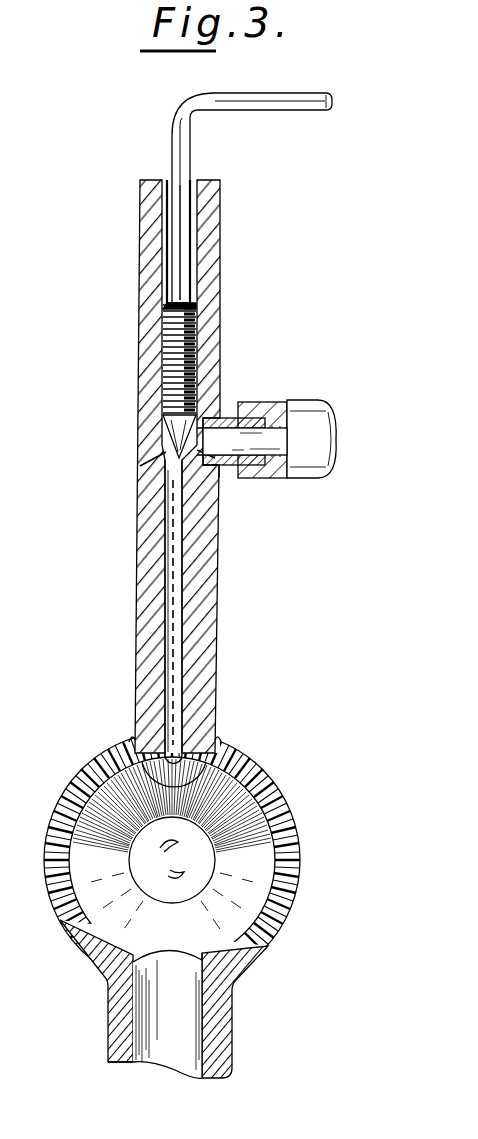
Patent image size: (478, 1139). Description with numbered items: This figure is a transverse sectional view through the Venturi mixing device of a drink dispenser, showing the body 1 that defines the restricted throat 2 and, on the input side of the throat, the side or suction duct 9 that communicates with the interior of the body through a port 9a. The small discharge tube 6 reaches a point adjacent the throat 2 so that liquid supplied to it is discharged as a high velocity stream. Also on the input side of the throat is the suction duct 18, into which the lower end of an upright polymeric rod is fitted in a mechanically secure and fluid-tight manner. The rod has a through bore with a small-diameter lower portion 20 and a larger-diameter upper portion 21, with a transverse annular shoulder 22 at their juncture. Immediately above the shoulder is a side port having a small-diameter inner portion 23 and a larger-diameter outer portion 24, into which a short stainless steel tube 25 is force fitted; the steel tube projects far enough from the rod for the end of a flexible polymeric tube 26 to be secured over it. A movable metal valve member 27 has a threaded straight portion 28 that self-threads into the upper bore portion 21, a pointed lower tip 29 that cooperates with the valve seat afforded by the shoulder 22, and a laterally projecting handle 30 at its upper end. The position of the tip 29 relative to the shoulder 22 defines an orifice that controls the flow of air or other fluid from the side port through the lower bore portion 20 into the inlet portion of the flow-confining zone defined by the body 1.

The body 1 is at (78, 764).
The restricted throat 2 is at (158, 857).
The discharge tube 6 is at (184, 863).
The suction duct 9 is at (222, 1024).
The port 9a is at (185, 955).
The suction duct 18 is at (213, 748).
The lower bore portion 20 is at (186, 548).
The upper bore portion 21 is at (158, 250).
The annular shoulder 22 is at (186, 450).
The inner portion of side port 23 is at (212, 480).
The outer portion of side port 24 is at (215, 402).
The stainless steel tube 25 is at (258, 478).
The flexible polymeric tube 26 is at (313, 412).
The valve member 27 is at (153, 381).
The threaded straight portion 28 is at (198, 320).
The pointed lower tip 29 is at (140, 466).
The handle 30 is at (239, 102).